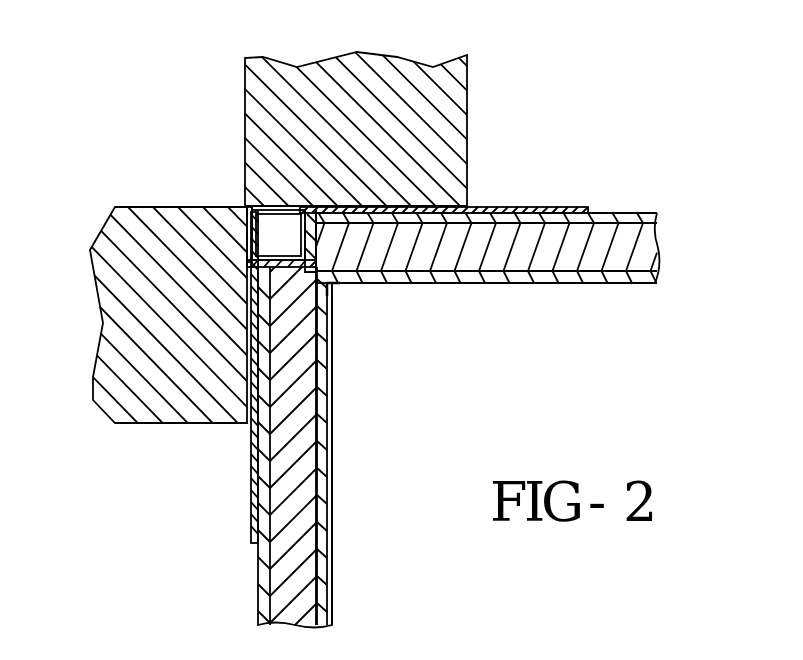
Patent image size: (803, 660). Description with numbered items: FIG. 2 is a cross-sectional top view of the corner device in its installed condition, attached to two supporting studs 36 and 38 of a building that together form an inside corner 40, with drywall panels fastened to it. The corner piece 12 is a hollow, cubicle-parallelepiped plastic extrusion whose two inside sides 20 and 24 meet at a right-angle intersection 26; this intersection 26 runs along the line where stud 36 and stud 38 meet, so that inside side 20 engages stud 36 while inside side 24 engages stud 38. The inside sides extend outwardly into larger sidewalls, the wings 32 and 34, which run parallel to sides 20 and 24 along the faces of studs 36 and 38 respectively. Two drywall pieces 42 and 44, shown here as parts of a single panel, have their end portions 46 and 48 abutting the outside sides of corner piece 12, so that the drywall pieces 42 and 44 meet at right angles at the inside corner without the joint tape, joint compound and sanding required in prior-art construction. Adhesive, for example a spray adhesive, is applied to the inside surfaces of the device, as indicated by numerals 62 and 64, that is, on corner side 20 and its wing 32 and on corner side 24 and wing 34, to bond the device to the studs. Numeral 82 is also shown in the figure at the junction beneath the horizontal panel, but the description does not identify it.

The corner piece 12 is at (317, 337).
The inside side 20 is at (253, 205).
The inside side 24 is at (243, 206).
The intersection 26 is at (250, 210).
The inside corner 40 is at (157, 206).
The wing 32 is at (545, 205).
The wing 34 is at (250, 468).
The stud 36 is at (375, 147).
The stud 38 is at (196, 332).
The drywall piece 42 is at (585, 253).
The drywall piece 44 is at (296, 532).
The end portion 46 is at (292, 204).
The end portion 48 is at (262, 263).
The adhesive 62 is at (433, 208).
The adhesive 64 is at (268, 405).
The adhesive fillet 82 is at (335, 292).